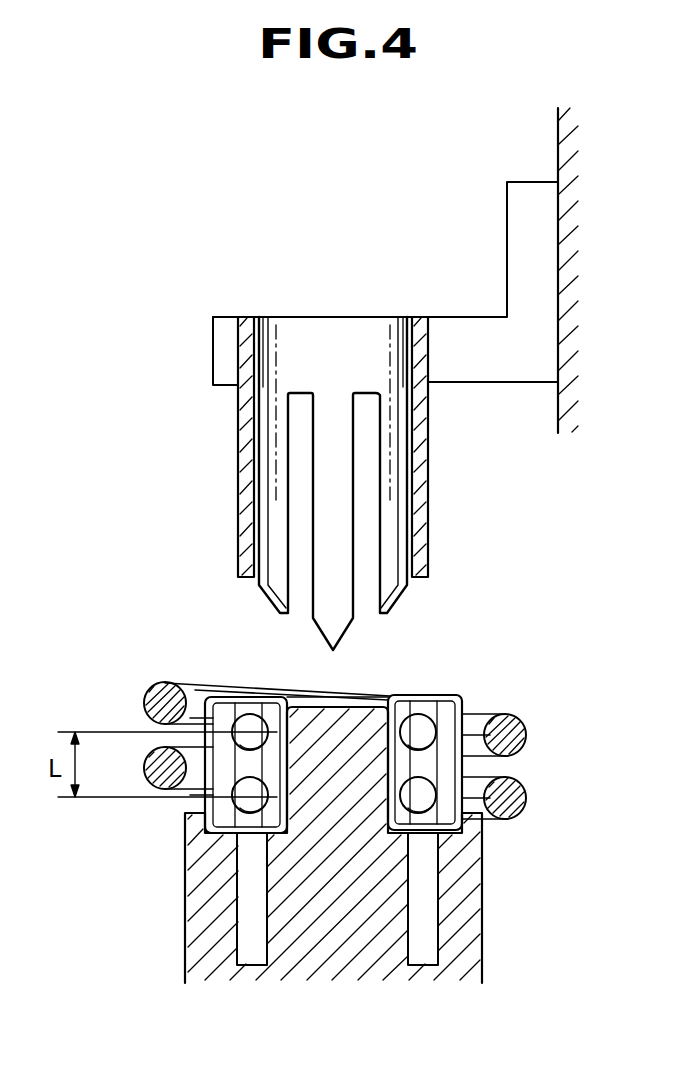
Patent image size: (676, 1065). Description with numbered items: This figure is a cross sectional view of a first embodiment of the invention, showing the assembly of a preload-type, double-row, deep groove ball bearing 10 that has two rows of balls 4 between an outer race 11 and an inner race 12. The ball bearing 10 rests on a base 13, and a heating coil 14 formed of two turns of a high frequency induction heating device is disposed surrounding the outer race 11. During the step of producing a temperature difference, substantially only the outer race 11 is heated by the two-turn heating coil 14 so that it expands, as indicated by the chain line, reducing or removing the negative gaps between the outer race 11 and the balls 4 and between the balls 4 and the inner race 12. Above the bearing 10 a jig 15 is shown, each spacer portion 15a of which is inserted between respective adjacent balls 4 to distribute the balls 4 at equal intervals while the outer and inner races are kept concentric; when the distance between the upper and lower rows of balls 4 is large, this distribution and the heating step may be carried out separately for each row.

The balls 4 is at (383, 778).
The preload-type, double-row, deep groove ball bearing 10 is at (379, 725).
The outer race 11 is at (458, 697).
The inner race 12 is at (432, 691).
The base 13 is at (482, 950).
The heating coil 14 is at (515, 745).
The jig 15 is at (321, 330).
The spacer portion 15a is at (428, 483).